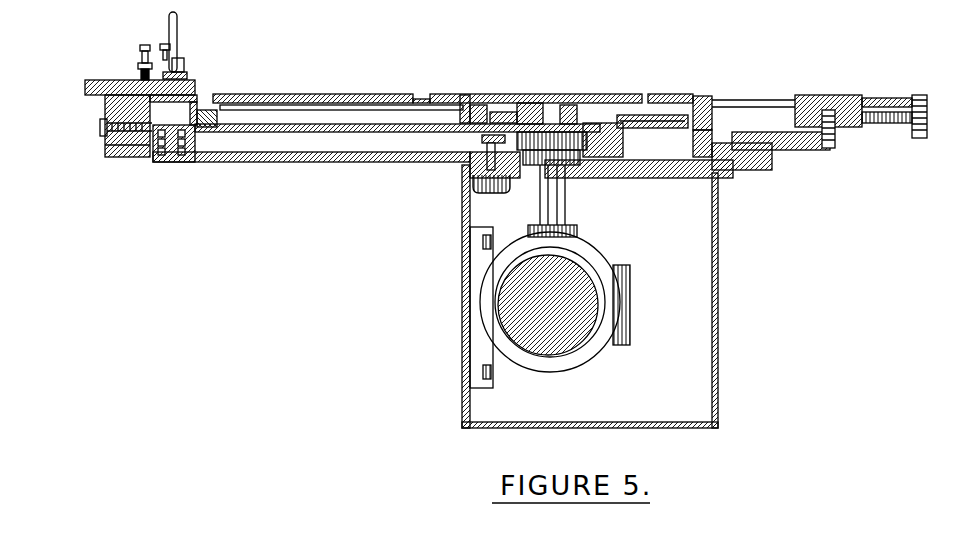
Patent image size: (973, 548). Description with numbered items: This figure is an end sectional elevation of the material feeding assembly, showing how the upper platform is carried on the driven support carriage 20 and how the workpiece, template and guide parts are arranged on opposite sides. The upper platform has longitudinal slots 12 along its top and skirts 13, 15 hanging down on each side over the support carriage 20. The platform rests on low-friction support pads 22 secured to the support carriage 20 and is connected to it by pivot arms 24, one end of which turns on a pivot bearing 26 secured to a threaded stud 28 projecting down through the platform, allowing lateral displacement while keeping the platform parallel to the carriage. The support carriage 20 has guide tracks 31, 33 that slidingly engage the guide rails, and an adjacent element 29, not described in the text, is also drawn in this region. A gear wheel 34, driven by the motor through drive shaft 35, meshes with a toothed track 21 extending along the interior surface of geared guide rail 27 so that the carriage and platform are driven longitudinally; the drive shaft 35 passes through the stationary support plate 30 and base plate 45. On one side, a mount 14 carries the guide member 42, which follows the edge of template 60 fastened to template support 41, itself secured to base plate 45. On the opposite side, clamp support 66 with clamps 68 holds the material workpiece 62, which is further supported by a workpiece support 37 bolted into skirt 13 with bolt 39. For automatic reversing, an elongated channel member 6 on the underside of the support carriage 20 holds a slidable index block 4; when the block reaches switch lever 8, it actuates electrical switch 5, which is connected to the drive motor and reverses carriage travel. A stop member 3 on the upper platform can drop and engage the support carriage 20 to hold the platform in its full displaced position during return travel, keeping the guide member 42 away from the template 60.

The stop member 3 is at (672, 110).
The index block 4 is at (490, 150).
The electrical switch 5 is at (490, 187).
The channel member 6 is at (485, 138).
The switch lever 8 is at (480, 163).
The longitudinal slot 12 is at (423, 97).
The skirt 13 is at (147, 158).
The mount 14 is at (733, 103).
The skirt 15 is at (678, 147).
The support carriage 20 is at (323, 133).
The toothed track 21 is at (600, 135).
The support pad 22 is at (217, 120).
The pivot arm 24 is at (493, 117).
The pivot bearing 26 is at (458, 110).
The guide rail 27 is at (653, 117).
The threaded stud 28 is at (467, 100).
The ball bearings 29 is at (200, 162).
The support plate 30 is at (290, 163).
The guide track 31 is at (170, 163).
The guide track 33 is at (632, 150).
The gear wheel 34 is at (547, 133).
The drive shaft 35 is at (565, 212).
The material workpiece support 37 is at (117, 158).
The bolt 39 is at (100, 127).
The template support 41 is at (767, 168).
The guide member 42 is at (833, 142).
The base plate 45 is at (743, 172).
The template 60 is at (810, 147).
The material workpiece 62 is at (120, 80).
The clamp support 66 is at (197, 83).
The clamp 68 is at (183, 68).